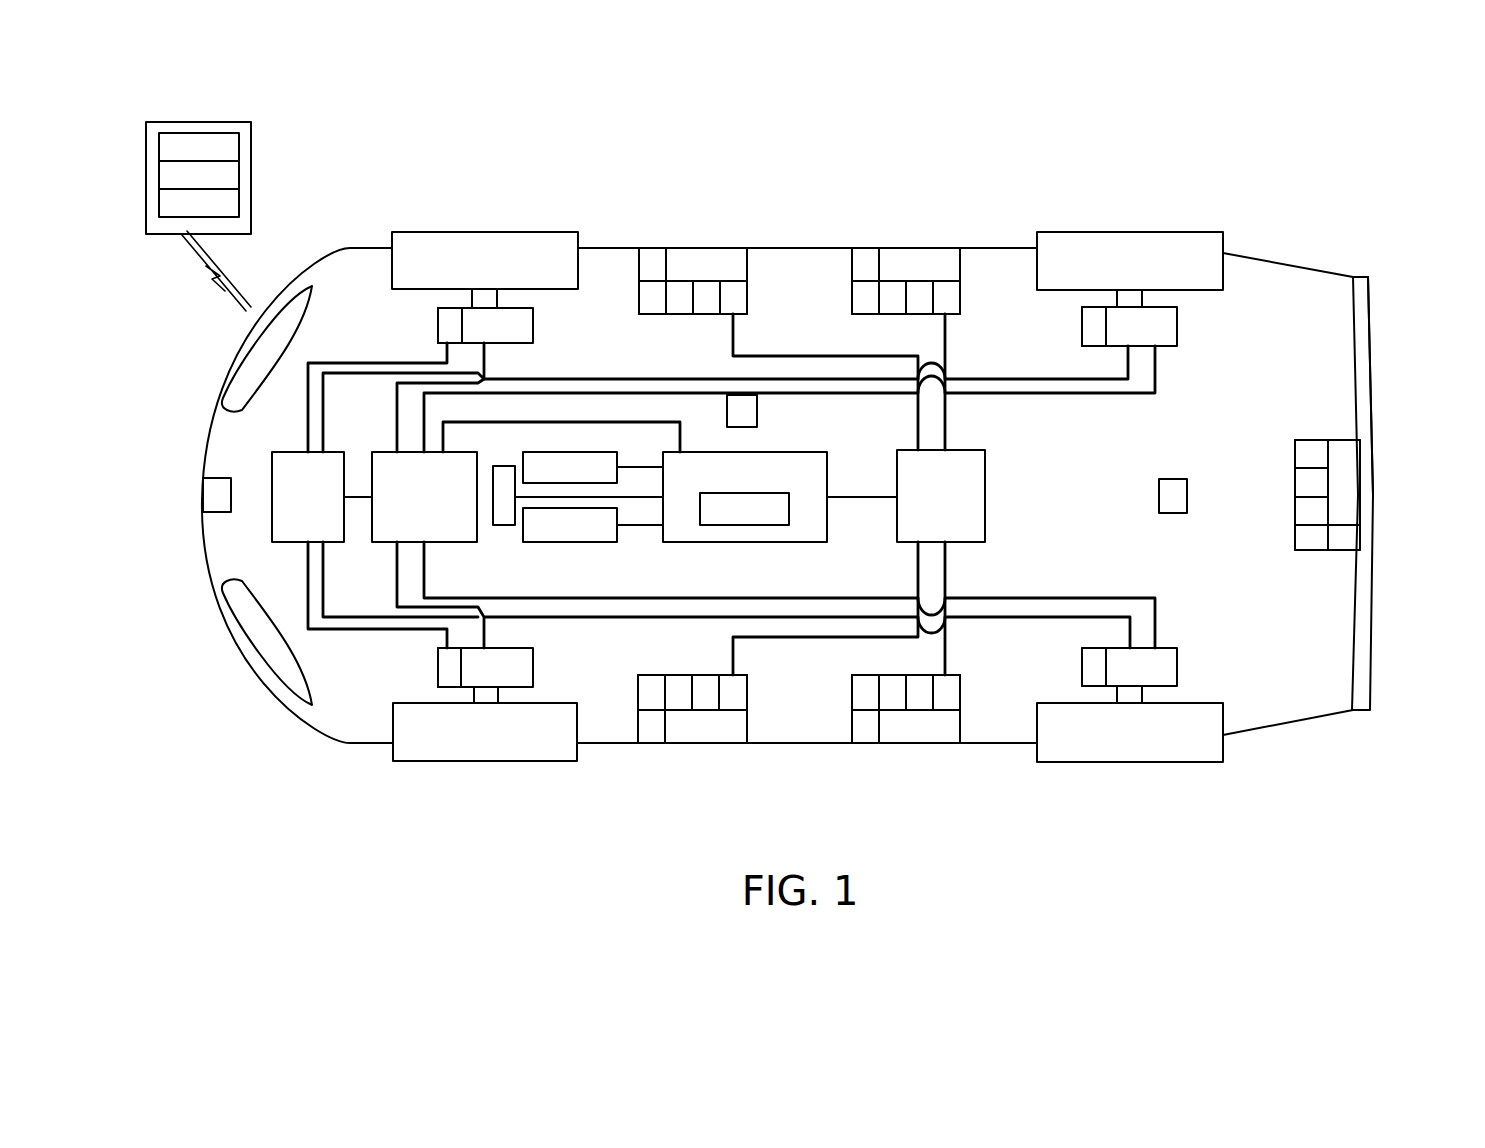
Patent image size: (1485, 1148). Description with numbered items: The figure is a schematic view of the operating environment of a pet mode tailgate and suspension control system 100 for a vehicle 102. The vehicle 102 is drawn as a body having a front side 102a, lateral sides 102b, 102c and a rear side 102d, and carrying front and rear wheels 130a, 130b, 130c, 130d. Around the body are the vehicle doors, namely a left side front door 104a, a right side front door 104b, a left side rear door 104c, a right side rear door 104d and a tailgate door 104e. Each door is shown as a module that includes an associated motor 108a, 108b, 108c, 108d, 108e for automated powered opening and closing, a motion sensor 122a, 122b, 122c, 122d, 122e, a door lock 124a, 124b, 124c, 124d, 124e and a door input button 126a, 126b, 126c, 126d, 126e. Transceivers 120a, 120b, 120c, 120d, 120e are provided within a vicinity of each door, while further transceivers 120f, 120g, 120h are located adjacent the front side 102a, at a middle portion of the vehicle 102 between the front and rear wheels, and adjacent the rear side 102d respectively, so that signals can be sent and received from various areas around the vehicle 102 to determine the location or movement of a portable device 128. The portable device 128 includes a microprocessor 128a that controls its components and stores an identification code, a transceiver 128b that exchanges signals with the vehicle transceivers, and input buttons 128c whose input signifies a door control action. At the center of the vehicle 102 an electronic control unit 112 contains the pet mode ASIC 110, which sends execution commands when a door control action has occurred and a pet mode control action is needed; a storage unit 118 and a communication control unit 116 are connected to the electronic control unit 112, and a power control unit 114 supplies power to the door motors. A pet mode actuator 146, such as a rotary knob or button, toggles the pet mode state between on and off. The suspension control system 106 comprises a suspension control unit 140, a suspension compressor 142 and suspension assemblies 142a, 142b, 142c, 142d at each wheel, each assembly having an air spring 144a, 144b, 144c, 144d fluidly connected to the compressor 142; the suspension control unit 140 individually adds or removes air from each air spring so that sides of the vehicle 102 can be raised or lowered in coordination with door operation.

The pet mode tailgate and suspension control system 100 is at (515, 815).
The vehicle 102 is at (292, 726).
The front side of the vehicle 102a is at (203, 545).
The side of the vehicle 102b is at (600, 743).
The side of the vehicle 102c is at (598, 248).
The rear side of the vehicle 102d is at (1373, 296).
The left side front door 104a is at (727, 743).
The right side front door 104b is at (727, 250).
The left side rear door 104c is at (940, 743).
The right side rear door 104d is at (940, 250).
The tailgate door 104e is at (1362, 470).
The suspension control system 106 is at (237, 528).
The motor 108a is at (702, 675).
The motor 108b is at (706, 318).
The motor 108c is at (950, 680).
The motor 108d is at (950, 322).
The motor 108e is at (1295, 482).
The pet mode application-specific integrated circuit 110 is at (718, 530).
The electronic control unit 112 is at (745, 542).
The power control unit 114 is at (985, 497).
The communication control unit 116 is at (578, 542).
The storage unit 118 is at (578, 452).
The transceiver 120a is at (638, 735).
The transceiver 120b is at (641, 262).
The transceiver 120c is at (858, 735).
The transceiver 120d is at (855, 262).
The transceiver 120e is at (1362, 535).
The transceiver 120f is at (205, 480).
The transceiver 120g is at (757, 412).
The transceiver 120h is at (1169, 513).
The motion sensor 122a is at (638, 695).
The motion sensor 122b is at (639, 300).
The motion sensor 122c is at (851, 695).
The motion sensor 122d is at (851, 300).
The motion sensor 122e is at (1295, 537).
The door lock 124a is at (747, 700).
The door lock 124b is at (749, 272).
The door lock 124c is at (960, 700).
The door lock 124d is at (960, 272).
The door lock 124e is at (1295, 455).
The door input button 126a is at (680, 675).
The door input button 126b is at (678, 318).
The door input button 126c is at (893, 675).
The door input button 126d is at (893, 318).
The door input button 126e is at (1295, 507).
The portable device 128 is at (271, 113).
The microprocessor 128a is at (239, 150).
The transceiver 128b is at (239, 178).
The input buttons 128c is at (239, 205).
The wheel 130a is at (483, 761).
The wheel 130b is at (483, 232).
The wheel 130c is at (1130, 762).
The wheel 130d is at (1130, 232).
The suspension control unit 140 is at (450, 542).
The suspension compressor 142 is at (285, 452).
The suspension assembly 142a is at (510, 648).
The suspension assembly 142b is at (515, 343).
The suspension assembly 142c is at (1177, 668).
The suspension assembly 142d is at (1177, 330).
The air spring 144a is at (438, 655).
The air spring 144b is at (438, 325).
The air spring 144c is at (1085, 650).
The air spring 144d is at (1085, 343).
The pet mode actuator 146 is at (503, 525).